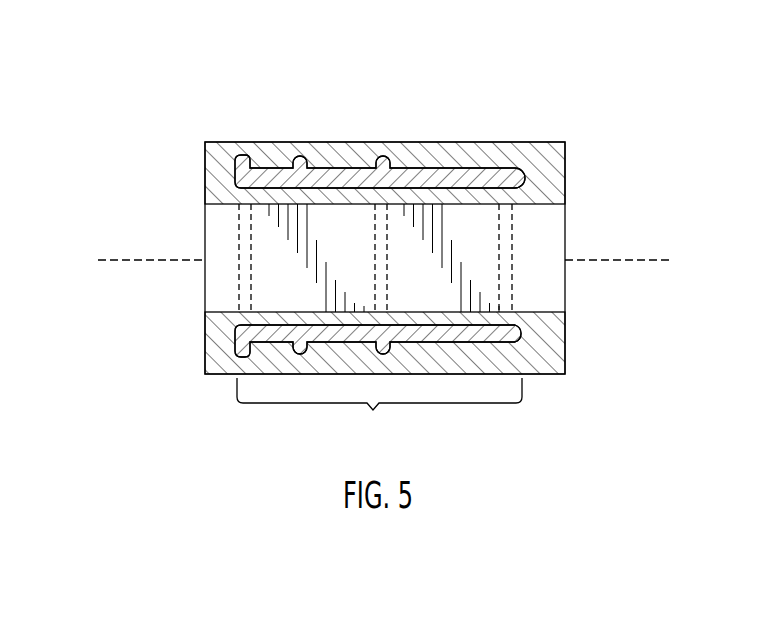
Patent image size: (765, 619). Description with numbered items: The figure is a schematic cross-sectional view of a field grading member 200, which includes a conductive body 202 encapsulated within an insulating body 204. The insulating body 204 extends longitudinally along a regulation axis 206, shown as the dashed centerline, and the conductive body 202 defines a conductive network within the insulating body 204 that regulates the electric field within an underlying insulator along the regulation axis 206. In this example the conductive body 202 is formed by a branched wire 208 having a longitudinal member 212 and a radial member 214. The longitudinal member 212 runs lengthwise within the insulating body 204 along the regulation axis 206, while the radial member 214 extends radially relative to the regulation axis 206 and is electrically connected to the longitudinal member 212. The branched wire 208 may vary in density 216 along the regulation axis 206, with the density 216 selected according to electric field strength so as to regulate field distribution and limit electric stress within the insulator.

The field grading member 200 is at (330, 318).
The conductive body 202 is at (358, 150).
The insulating body 204 is at (252, 150).
The regulation axis 206 is at (608, 260).
The branched wire 208 is at (480, 172).
The longitudinal member 212 is at (500, 340).
The radial member 214 is at (240, 288).
The density 216 is at (379, 411).